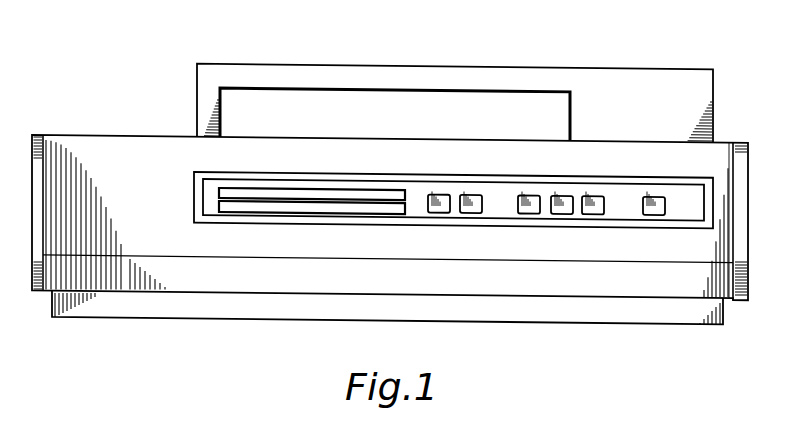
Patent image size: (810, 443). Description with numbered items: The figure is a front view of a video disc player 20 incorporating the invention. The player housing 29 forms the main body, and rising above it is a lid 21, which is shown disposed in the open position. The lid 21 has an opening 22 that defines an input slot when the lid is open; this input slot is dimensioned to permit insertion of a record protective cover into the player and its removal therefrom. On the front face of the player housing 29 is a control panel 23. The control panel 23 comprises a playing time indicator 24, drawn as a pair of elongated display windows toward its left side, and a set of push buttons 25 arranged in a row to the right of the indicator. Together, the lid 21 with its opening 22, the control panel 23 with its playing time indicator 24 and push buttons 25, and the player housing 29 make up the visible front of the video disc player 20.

The video disc player 20 is at (82, 104).
The lid 21 is at (713, 90).
The opening 22 is at (493, 93).
The control panel 23 is at (191, 198).
The playing time indicator 24 is at (312, 201).
The push buttons 25 is at (508, 200).
The player housing 29 is at (750, 224).